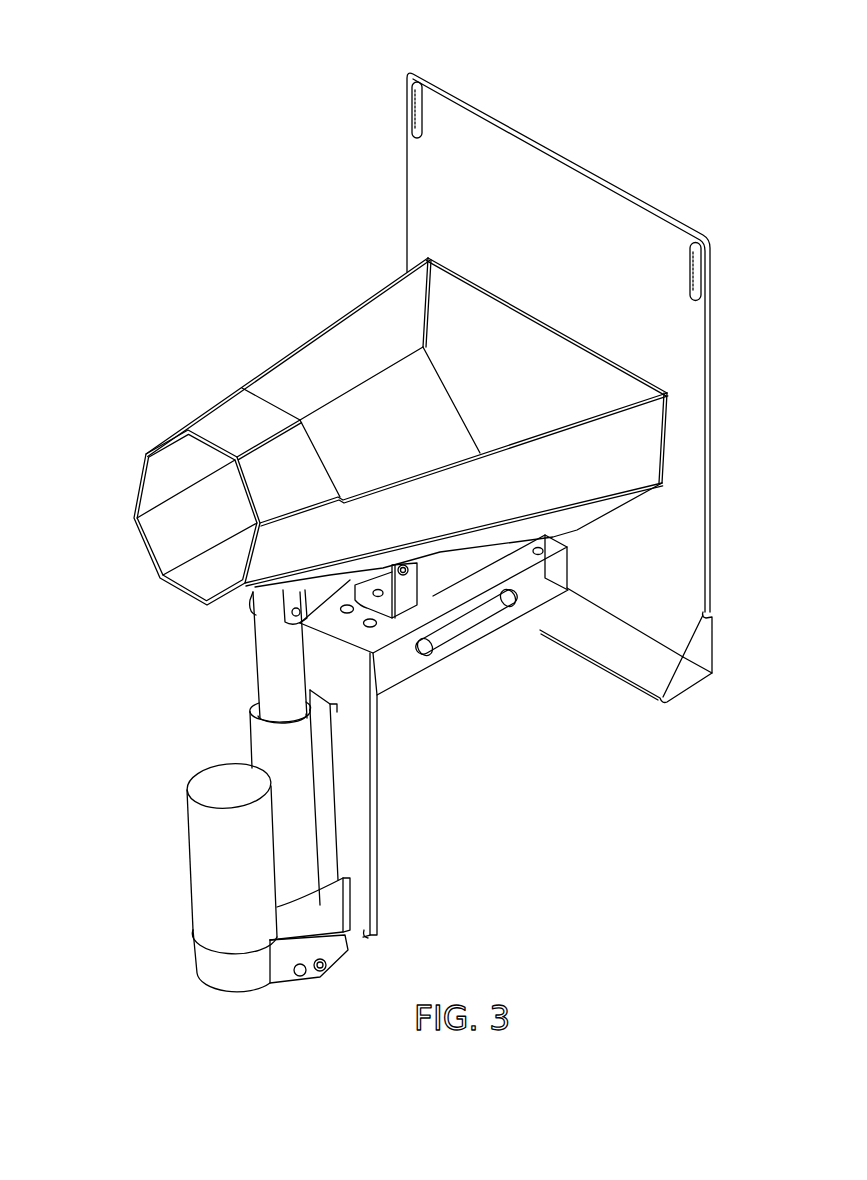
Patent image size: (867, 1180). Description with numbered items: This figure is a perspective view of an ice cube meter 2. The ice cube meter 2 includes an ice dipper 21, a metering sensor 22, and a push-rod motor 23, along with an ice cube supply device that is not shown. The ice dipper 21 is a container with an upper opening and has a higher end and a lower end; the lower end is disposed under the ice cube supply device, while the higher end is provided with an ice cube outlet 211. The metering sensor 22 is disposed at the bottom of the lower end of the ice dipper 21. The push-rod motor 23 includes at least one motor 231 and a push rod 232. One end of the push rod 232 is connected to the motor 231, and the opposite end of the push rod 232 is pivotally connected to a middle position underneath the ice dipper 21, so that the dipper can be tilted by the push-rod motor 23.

The ice cube meter 2 is at (412, 509).
The ice dipper 21 is at (352, 338).
The ice cube outlet 211 is at (173, 463).
The metering sensor 22 is at (543, 575).
The push-rod motor 23 is at (190, 870).
The motor 231 is at (317, 857).
The push rod 232 is at (275, 662).